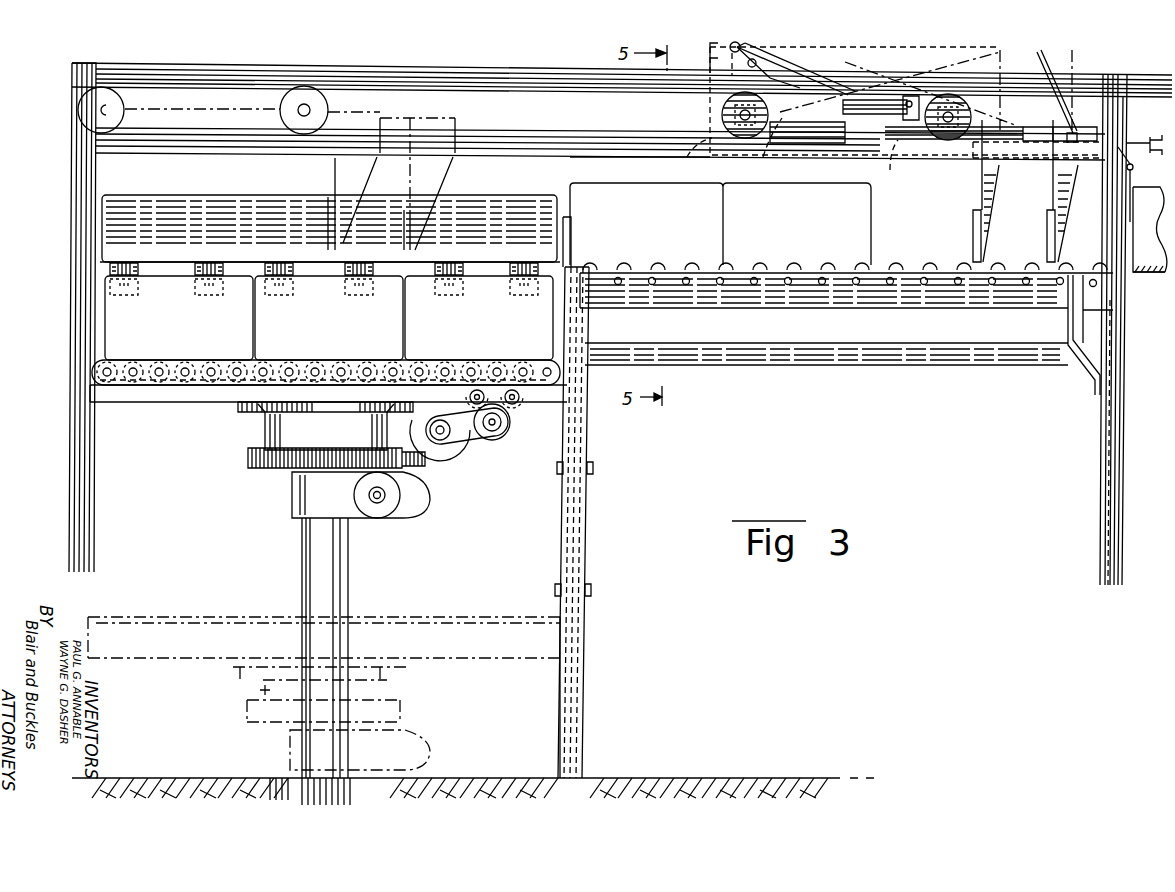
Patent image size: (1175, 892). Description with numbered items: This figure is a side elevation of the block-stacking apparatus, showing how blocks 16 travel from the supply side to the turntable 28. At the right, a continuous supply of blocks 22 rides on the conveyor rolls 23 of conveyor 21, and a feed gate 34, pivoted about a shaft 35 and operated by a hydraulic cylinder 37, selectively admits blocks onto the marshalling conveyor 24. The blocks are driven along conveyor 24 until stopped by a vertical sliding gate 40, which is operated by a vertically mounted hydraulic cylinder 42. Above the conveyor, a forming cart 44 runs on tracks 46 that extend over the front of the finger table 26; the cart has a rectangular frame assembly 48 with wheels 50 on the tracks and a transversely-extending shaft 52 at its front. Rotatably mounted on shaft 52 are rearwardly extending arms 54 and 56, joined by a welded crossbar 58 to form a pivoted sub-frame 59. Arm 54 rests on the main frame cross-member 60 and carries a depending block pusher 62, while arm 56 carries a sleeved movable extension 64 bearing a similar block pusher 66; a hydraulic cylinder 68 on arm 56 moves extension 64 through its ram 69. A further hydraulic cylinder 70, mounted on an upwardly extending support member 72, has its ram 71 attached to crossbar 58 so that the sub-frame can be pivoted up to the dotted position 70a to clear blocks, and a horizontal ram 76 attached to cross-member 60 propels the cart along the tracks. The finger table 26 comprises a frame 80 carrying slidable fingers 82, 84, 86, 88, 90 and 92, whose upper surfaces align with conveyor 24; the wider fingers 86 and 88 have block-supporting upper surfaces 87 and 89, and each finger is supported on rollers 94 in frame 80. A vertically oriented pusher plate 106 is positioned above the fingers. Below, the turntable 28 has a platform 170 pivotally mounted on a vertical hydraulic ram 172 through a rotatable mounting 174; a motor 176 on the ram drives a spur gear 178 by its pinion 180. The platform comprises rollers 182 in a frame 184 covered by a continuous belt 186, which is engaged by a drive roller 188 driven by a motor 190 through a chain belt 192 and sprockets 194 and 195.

The blocks 16 is at (622, 190).
The conveyor 21 is at (1143, 282).
The blocks 22 is at (1140, 238).
The conveyor rolls 23 is at (950, 271).
The marshalling conveyor 24 is at (848, 306).
The finger table 26 is at (122, 184).
The turntable 28 is at (222, 605).
The feed gate 34 is at (1128, 192).
The shaft 35 is at (1134, 167).
The hydraulic cylinder 37 is at (1157, 135).
The vertical sliding gate 40 is at (568, 238).
The hydraulic cylinder 42 is at (590, 505).
The forming cart 44 is at (195, 108).
The tracks 46 is at (557, 131).
The rectangular frame assembly 48 is at (640, 170).
The wheels 50 is at (722, 118).
The transversely-extending shaft 52 is at (760, 157).
The arm 54 is at (403, 118).
The arm 56 is at (339, 121).
The crossbar 58 is at (889, 160).
The pivoted sub-frame 59 is at (930, 46).
The main frame cross-member 60 is at (972, 156).
The block pusher 62 is at (402, 220).
The sleeved movable extension 64 is at (1003, 130).
The block pusher 66 is at (328, 225).
The hydraulic cylinder 68 is at (814, 132).
The ram 69 is at (887, 104).
The hydraulic cylinder 70 is at (732, 76).
The raised position 70a is at (802, 48).
The ram 71 is at (862, 114).
The support member 72 is at (710, 56).
The ram 76 is at (1033, 160).
The frame 80 is at (100, 272).
The finger 82 is at (522, 263).
The finger 84 is at (442, 263).
The finger 86 is at (360, 280).
The block-supporting upper surface 87 is at (352, 263).
The finger 88 is at (290, 279).
The block-supporting upper surface 89 is at (306, 264).
The finger 90 is at (202, 263).
The finger 92 is at (123, 263).
The rollers 94 is at (140, 279).
The pusher plate 106 is at (207, 203).
The platform 170 is at (92, 366).
The vertical hydraulic ram 172 is at (302, 554).
The rotatable mounting 174 is at (265, 432).
The motor 176 is at (392, 504).
The spur gear 178 is at (248, 460).
The pinion 180 is at (418, 468).
The rollers 182 is at (181, 361).
The frame 184 is at (147, 396).
The continuous belt 186 is at (275, 362).
The drive roller 188 is at (508, 428).
The motor 190 is at (452, 450).
The chain belt 192 is at (483, 437).
The sprocket 194 is at (506, 417).
The sprocket 195 is at (430, 430).